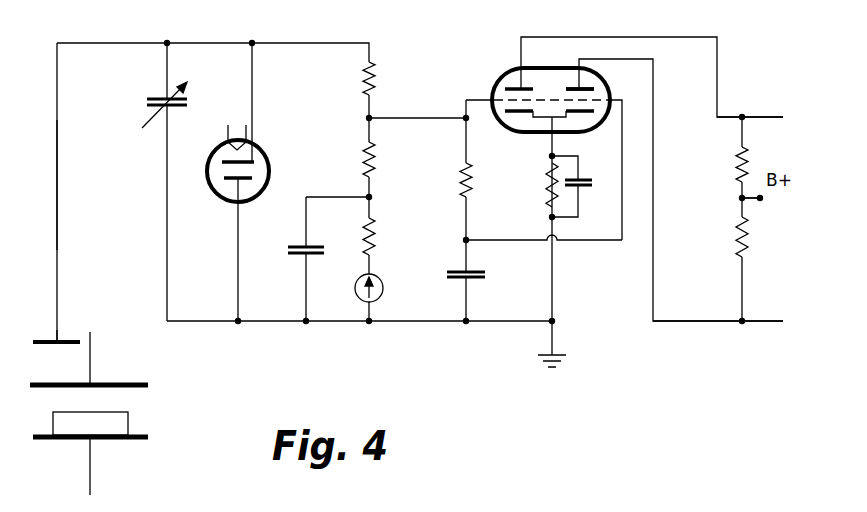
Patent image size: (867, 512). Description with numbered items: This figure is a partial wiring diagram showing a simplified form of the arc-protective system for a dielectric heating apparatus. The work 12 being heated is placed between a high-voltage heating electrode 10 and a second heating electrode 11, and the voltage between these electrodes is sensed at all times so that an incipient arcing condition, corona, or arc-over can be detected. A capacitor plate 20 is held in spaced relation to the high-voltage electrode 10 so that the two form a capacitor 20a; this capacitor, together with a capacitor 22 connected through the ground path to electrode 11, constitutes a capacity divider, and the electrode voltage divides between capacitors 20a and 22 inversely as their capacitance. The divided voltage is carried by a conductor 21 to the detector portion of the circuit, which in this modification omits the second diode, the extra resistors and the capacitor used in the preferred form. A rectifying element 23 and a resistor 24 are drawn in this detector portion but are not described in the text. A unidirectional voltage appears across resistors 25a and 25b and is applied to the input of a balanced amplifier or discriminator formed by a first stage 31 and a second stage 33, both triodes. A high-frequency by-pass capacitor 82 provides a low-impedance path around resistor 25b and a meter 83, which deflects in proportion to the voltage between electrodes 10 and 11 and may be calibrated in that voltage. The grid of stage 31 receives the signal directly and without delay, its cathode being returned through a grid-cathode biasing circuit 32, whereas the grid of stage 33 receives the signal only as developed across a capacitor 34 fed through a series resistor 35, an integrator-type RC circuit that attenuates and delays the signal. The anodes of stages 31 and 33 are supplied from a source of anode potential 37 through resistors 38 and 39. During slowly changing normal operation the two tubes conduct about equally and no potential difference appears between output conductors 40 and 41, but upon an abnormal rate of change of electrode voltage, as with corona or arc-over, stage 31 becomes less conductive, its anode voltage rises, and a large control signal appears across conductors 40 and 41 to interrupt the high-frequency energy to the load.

The heating electrode 10 is at (133, 383).
The heating electrode 11 is at (135, 439).
The work 12 is at (128, 421).
The capacitor plate 20 is at (60, 342).
The capacitor 20a is at (40, 363).
The conductor 21 is at (57, 170).
The capacitor 22 is at (147, 101).
The gas discharge tube 23 is at (265, 148).
The resistor 24 is at (375, 72).
The resistor 25a is at (375, 158).
The resistor 25b is at (375, 236).
The high-frequency by-pass capacitor 82 is at (290, 249).
The meter 83 is at (383, 288).
The first amplifier stage 31 is at (505, 80).
The grid-cathode biasing circuit 32 is at (548, 190).
The second amplifying stage 33 is at (588, 80).
The capacitor 34 is at (485, 276).
The resistor 35 is at (470, 172).
The source of anode potential 37 is at (760, 200).
The resistor 38 is at (746, 160).
The resistor 39 is at (746, 238).
The output conductor 40 is at (730, 116).
The output conductor 41 is at (713, 322).